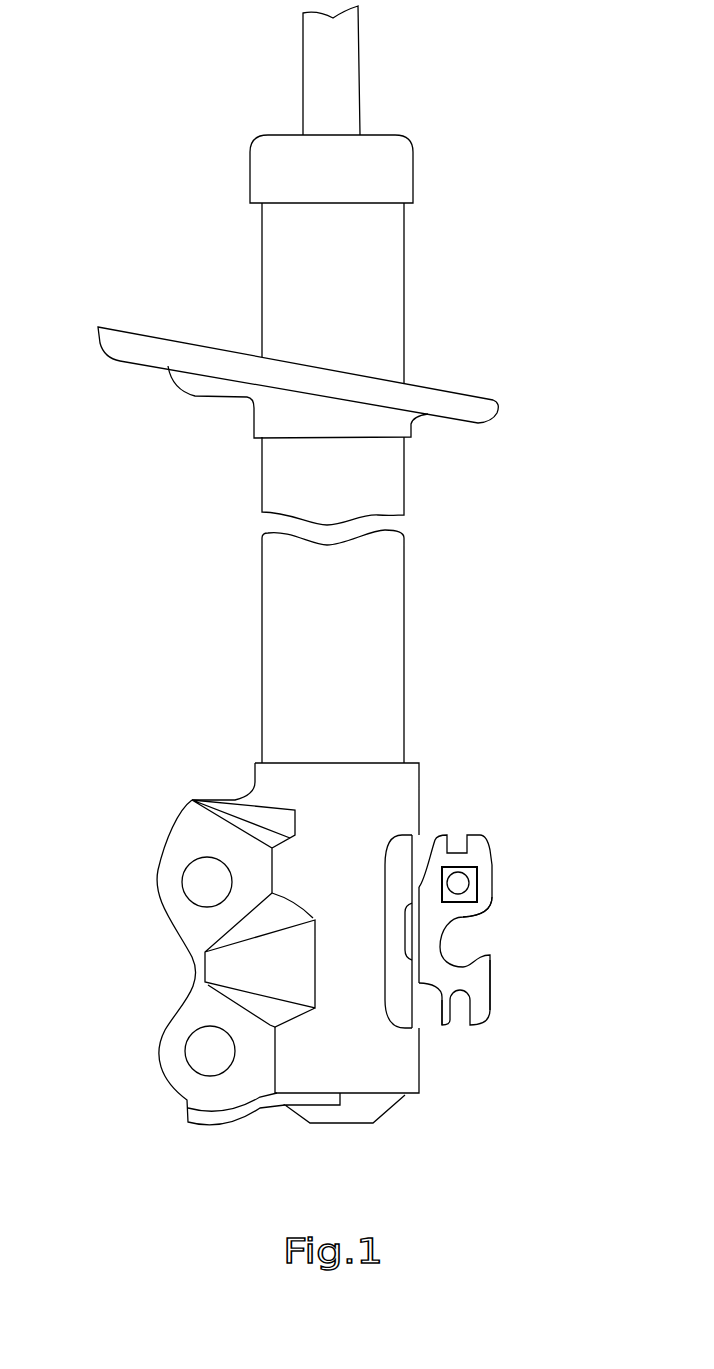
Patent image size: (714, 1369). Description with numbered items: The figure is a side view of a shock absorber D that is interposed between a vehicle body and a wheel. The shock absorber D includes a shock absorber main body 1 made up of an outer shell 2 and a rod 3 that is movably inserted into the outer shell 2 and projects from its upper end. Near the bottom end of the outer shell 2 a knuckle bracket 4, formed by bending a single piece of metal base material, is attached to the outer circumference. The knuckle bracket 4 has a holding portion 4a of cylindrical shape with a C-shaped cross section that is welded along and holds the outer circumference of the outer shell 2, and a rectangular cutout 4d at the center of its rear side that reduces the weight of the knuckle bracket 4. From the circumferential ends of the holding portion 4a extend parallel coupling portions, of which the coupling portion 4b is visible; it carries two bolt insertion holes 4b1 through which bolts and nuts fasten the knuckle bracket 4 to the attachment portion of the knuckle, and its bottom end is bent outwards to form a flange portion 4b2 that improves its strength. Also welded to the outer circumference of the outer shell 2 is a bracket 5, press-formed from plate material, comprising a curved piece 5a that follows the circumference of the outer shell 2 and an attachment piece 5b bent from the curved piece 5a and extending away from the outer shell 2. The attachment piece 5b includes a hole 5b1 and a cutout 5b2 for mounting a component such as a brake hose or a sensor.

The shock absorber D is at (257, 107).
The shock absorber main body 1 is at (415, 157).
The outer shell 2 is at (404, 332).
The rod 3 is at (359, 97).
The knuckle bracket 4 is at (419, 767).
The holding portion 4a is at (419, 1068).
The coupling portion 4b is at (203, 836).
The bolt insertion holes 4b1 is at (187, 893).
The flange portion 4b2 is at (258, 1119).
The cutout 4d is at (418, 838).
The bracket 5 is at (495, 862).
The curved piece 5a is at (418, 935).
The attachment piece 5b is at (488, 992).
The hole 5b1 is at (463, 887).
The cutout 5b2 is at (492, 948).